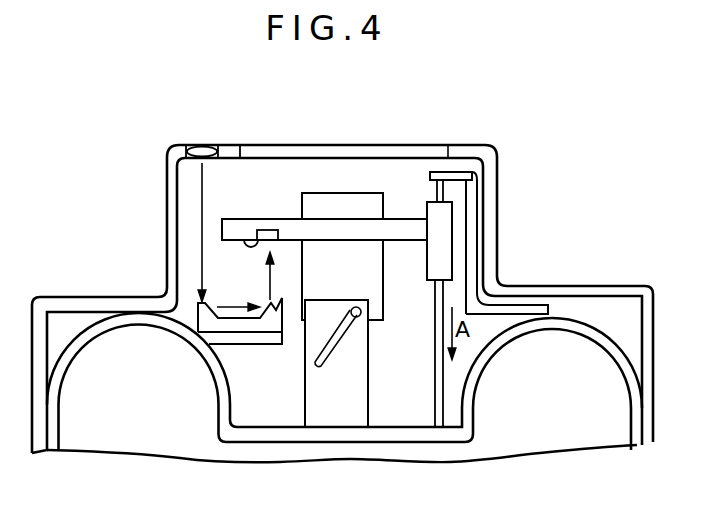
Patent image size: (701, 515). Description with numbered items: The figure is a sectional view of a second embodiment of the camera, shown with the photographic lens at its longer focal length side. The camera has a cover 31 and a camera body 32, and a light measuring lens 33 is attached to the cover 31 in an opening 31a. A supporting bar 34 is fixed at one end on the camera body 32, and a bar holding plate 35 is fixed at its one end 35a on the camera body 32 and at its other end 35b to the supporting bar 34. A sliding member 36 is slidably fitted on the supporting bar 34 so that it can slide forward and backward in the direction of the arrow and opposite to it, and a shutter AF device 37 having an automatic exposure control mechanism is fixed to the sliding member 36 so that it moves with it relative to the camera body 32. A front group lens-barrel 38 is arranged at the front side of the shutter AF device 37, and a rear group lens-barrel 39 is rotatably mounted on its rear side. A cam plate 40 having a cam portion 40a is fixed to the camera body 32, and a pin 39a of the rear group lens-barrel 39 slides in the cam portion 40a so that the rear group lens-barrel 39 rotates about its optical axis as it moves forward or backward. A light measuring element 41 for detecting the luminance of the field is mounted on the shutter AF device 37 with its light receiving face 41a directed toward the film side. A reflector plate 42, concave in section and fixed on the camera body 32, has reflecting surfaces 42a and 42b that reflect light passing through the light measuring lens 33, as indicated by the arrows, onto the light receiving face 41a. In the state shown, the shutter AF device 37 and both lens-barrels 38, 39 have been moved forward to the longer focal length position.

The cover 31 is at (86, 297).
The housing opening 31a is at (218, 147).
The camera body 32 is at (52, 416).
The light measuring lens 33 is at (203, 147).
The supporting bar 34 is at (434, 383).
The bar holding plate 35 is at (474, 180).
The one end of bar holding plate 35a is at (533, 314).
The other end of bar holding plate 35b is at (438, 172).
The sliding member 36 is at (433, 263).
The shutter AF device 37 is at (407, 218).
The front group lens-barrel 38 is at (355, 193).
The rear group lens-barrel 39 is at (368, 283).
The pin 39a is at (360, 316).
The cam plate 40 is at (350, 412).
The cam portion 40a is at (343, 340).
The light measuring element 41 is at (266, 230).
The light receiving face 41a is at (247, 243).
The reflector plate 42 is at (258, 333).
The reflecting surface 42a is at (196, 303).
The reflecting surface 42b is at (272, 302).